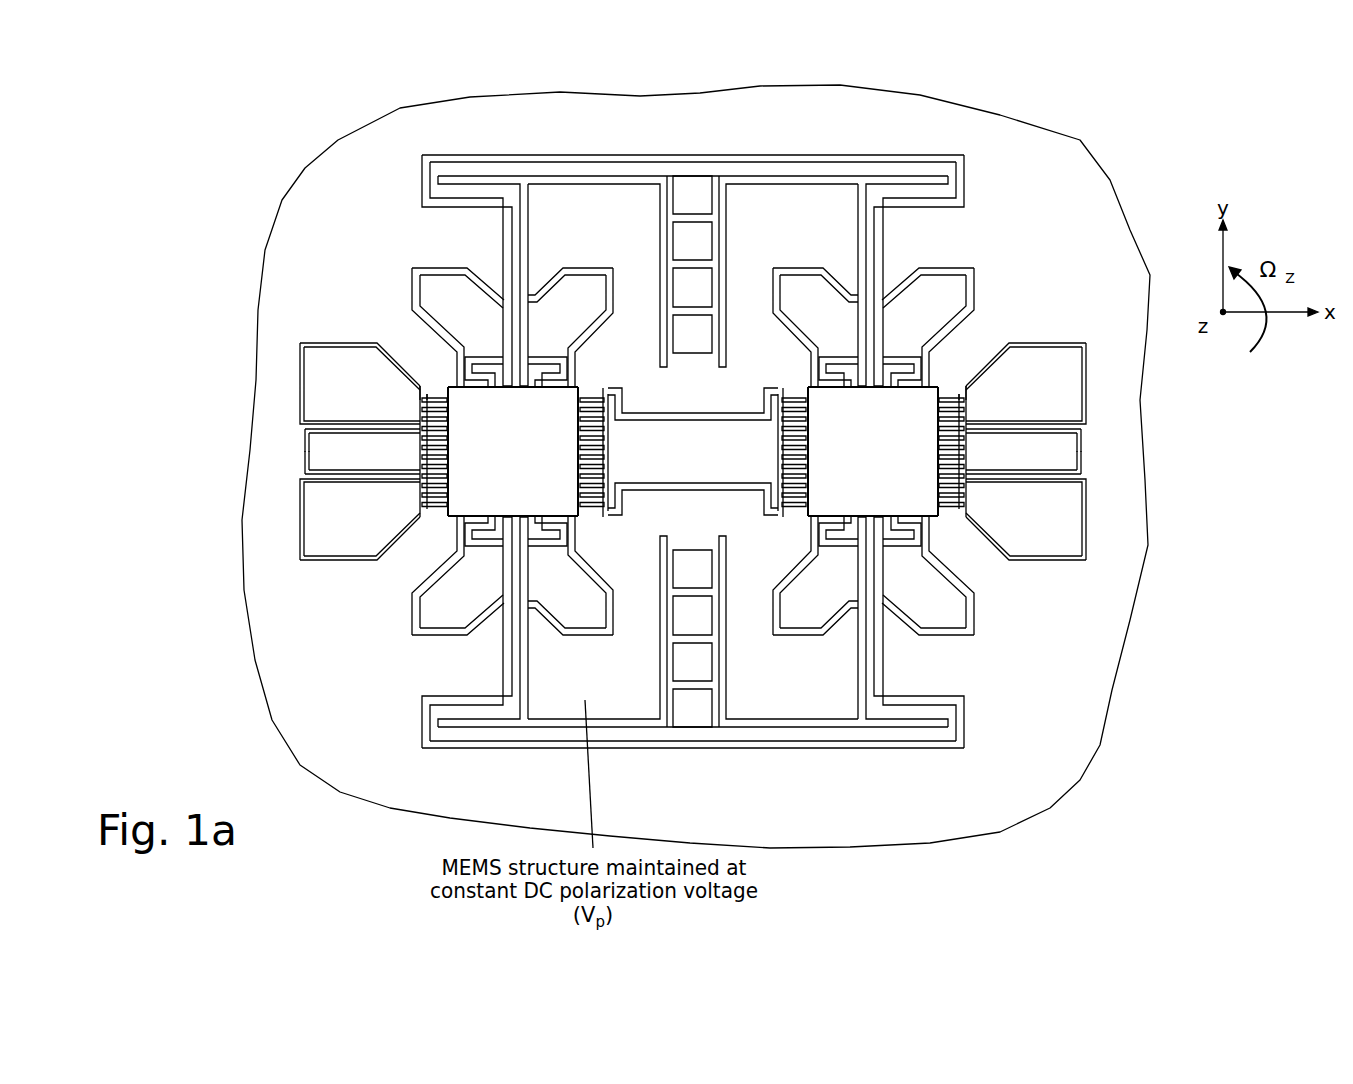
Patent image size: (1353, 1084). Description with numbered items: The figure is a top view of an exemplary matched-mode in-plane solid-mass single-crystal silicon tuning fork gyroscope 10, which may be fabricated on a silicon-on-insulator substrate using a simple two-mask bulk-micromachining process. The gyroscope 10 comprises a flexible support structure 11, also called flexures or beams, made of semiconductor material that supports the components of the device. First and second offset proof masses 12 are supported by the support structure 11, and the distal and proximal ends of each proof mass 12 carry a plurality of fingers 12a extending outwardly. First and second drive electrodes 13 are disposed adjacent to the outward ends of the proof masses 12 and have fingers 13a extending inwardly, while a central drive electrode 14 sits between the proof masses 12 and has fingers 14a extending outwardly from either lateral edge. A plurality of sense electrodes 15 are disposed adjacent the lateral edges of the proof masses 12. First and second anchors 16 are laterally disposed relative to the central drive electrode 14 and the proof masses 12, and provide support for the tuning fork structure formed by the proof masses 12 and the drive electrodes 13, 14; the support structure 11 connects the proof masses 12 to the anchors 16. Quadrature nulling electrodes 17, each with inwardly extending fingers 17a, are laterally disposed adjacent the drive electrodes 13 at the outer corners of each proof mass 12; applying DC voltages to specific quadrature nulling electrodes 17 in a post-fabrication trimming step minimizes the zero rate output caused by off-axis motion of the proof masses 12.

The tuning fork gyroscope 10 is at (270, 139).
The flexible support structure 11 is at (1113, 712).
The proof mass 12 is at (490, 410).
The fingers 12a is at (437, 506).
The drive electrode 13 is at (318, 453).
The fingers 13a is at (418, 448).
The central drive electrode 14 is at (737, 458).
The fingers 14a is at (600, 518).
The sense electrode 15 is at (449, 285).
The anchor 16 is at (795, 217).
The quadrature nulling electrode 17 is at (318, 368).
The fingers 17a is at (430, 388).